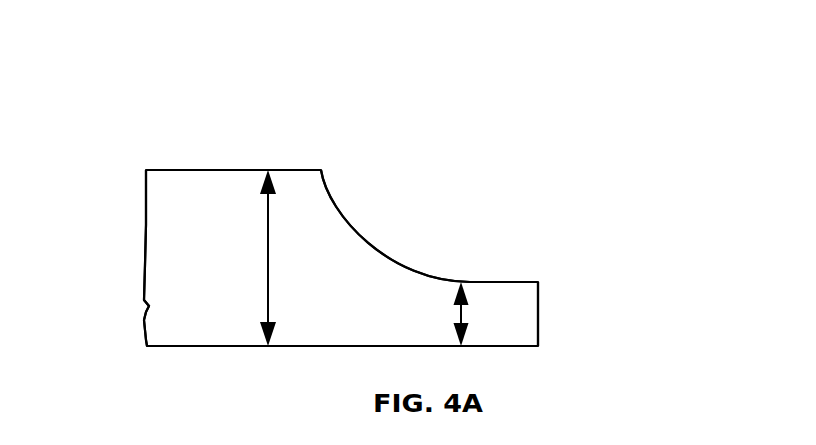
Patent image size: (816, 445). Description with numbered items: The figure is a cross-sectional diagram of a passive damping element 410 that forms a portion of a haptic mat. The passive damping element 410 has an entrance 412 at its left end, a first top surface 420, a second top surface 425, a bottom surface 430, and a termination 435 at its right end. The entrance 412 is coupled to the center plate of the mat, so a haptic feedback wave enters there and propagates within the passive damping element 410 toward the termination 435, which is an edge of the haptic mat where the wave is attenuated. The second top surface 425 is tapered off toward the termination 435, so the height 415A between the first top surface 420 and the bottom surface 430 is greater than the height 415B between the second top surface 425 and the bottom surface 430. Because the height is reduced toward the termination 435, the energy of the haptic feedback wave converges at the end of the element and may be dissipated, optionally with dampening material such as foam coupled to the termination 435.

The passive damping element 410 is at (341, 185).
The entrance 412 is at (122, 261).
The height 415A is at (241, 258).
The height 415B is at (427, 314).
The first top surface 420 is at (242, 150).
The second top surface 425 is at (414, 236).
The bottom surface 430 is at (249, 366).
The termination 435 is at (560, 312).